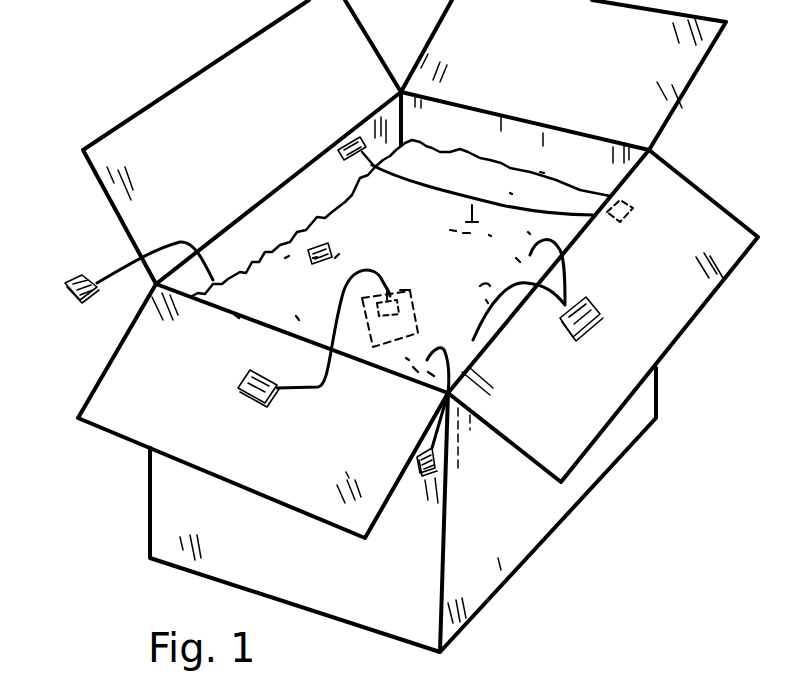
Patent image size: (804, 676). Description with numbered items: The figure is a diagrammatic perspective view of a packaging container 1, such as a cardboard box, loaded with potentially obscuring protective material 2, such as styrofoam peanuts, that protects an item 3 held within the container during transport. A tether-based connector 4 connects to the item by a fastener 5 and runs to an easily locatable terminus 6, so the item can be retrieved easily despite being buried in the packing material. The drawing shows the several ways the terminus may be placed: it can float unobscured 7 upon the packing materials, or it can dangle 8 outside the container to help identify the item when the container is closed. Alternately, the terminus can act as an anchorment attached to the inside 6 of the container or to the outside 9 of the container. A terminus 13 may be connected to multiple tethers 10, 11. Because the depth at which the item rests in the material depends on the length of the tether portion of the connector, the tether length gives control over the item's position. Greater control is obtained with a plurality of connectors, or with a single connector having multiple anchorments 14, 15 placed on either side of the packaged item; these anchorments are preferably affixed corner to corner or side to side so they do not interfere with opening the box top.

The packaging container 1 is at (178, 115).
The protective material 2 is at (436, 177).
The item 3 is at (413, 310).
The tether-based connector 4 is at (315, 386).
The fastener 5 is at (400, 294).
The terminus 6 is at (238, 382).
The terminus floating unobscured 7 is at (310, 248).
The terminus dangling outside container 8 is at (75, 276).
The anchorment on outside of container 9 is at (420, 474).
The tether 10 is at (567, 265).
The tether 11 is at (527, 287).
The terminus 13 is at (596, 298).
The anchorment 14 is at (348, 147).
The anchorment 15 is at (633, 215).